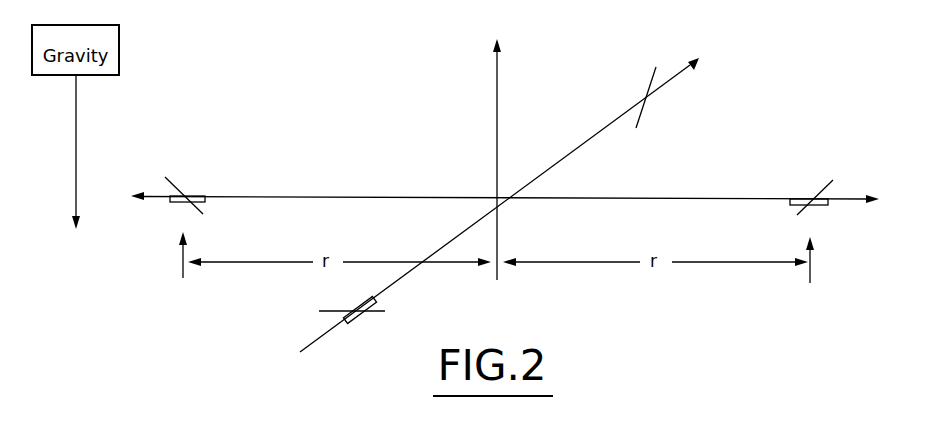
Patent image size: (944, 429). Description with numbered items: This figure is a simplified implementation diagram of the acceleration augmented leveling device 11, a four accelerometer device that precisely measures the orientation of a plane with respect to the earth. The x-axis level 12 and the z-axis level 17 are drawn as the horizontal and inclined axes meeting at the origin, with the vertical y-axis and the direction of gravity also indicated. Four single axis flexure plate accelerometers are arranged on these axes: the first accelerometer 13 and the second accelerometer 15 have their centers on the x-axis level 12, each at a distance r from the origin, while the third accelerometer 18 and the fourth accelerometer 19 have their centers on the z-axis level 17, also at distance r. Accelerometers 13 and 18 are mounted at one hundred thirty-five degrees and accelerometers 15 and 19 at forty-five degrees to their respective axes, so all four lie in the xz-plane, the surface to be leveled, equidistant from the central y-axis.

The leveling device 11 is at (414, 100).
The x-axis level 12 is at (649, 197).
The first flexure plate accelerometer 13 is at (180, 196).
The second flexure plate accelerometer 15 is at (826, 198).
The z-axis level 17 is at (589, 138).
The third flexure plate accelerometer 18 is at (353, 303).
The fourth flexure plate accelerometer 19 is at (651, 87).